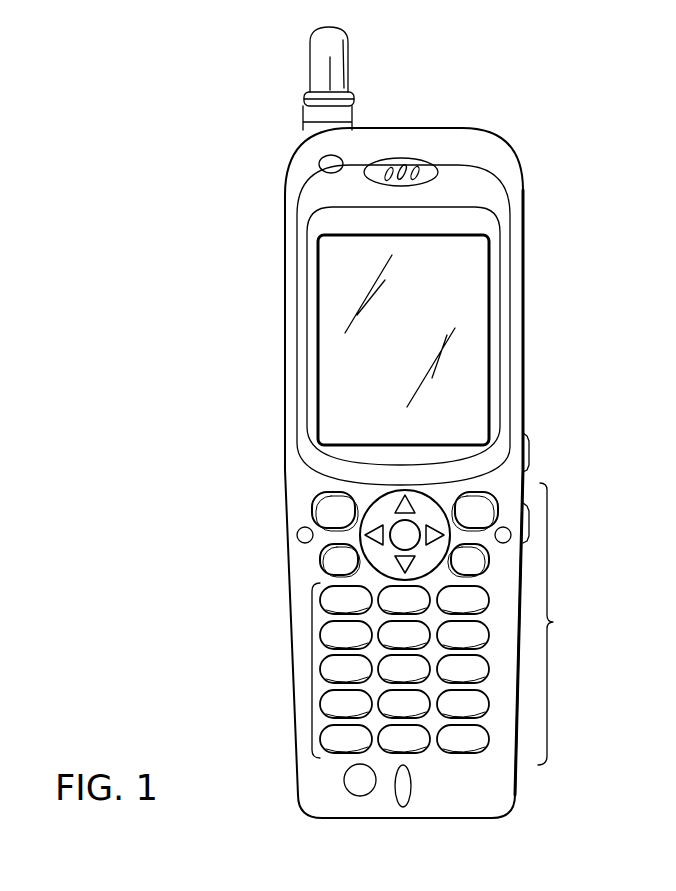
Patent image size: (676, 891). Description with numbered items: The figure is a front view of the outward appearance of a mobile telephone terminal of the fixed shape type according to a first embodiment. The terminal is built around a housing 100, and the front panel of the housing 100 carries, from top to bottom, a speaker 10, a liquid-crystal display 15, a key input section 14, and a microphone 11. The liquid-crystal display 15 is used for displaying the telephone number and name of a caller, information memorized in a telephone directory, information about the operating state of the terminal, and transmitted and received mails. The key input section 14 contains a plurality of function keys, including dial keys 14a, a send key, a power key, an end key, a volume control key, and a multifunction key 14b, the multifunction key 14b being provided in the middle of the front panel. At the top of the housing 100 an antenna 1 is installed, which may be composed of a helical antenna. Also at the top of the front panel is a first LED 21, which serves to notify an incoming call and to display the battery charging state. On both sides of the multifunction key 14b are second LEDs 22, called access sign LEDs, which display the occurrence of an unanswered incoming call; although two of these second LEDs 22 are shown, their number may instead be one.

The housing 100 is at (292, 373).
The antenna 1 is at (322, 53).
The speaker 10 is at (412, 162).
The microphone 11 is at (405, 790).
The key input section 14 is at (402, 624).
The dial keys 14a is at (312, 670).
The multifunction key 14b is at (380, 560).
The liquid-crystal display 15 is at (480, 330).
The first LED 21 is at (322, 165).
The second LEDs 22 is at (297, 535).